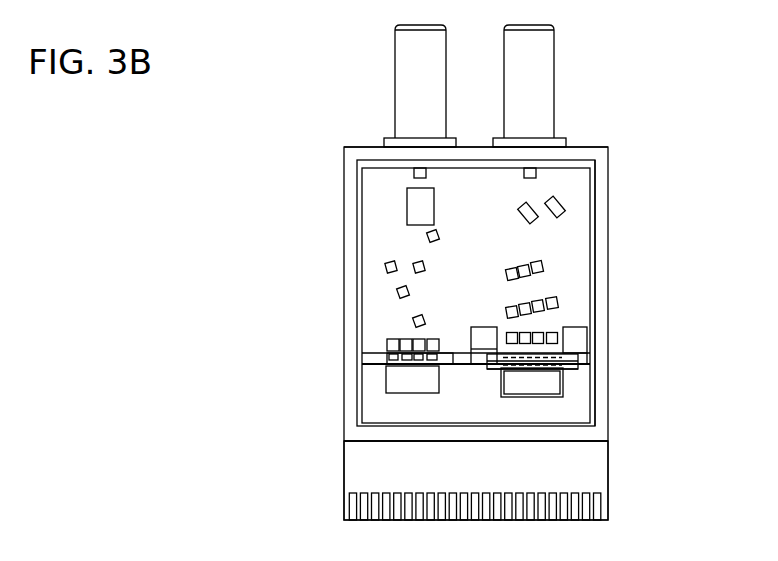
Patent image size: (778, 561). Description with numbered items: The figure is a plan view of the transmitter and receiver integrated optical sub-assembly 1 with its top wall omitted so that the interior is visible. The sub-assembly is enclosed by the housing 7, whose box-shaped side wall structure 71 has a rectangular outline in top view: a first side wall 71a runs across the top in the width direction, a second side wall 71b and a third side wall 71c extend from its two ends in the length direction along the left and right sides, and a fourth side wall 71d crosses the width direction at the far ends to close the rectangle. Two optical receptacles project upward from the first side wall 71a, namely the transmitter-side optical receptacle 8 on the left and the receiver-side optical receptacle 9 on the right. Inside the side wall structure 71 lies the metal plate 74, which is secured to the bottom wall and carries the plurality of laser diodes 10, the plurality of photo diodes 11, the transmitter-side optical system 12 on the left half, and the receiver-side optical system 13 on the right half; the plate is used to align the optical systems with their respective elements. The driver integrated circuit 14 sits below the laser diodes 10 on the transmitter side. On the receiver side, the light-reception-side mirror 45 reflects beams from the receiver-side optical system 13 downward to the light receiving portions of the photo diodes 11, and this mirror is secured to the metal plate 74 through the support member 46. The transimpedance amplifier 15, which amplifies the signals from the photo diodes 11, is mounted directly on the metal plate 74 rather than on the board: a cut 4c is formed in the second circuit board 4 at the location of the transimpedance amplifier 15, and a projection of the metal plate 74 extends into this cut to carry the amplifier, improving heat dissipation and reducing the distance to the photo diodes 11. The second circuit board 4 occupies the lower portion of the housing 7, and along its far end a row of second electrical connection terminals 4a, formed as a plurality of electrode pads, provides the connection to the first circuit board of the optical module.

The transmitter and receiver integrated optical sub-assembly 1 is at (702, 158).
The second circuit board 4 is at (592, 461).
The second electrical connection terminals 4a is at (597, 508).
The cut 4c is at (560, 382).
The housing 7 is at (648, 243).
The transmitter-side optical receptacle 8 is at (407, 54).
The receiver-side optical receptacle 9 is at (537, 51).
The laser diodes 10 is at (387, 360).
The photo diodes 11 is at (565, 355).
The transmitter-side optical system 12 is at (385, 247).
The receiver-side optical system 13 is at (563, 250).
The driver integrated circuit 14 is at (397, 379).
The transimpedance amplifier 15 is at (544, 382).
The light-reception-side mirror 45 is at (571, 364).
The support member 46 is at (578, 337).
The side wall structure 71 is at (610, 158).
The first side wall 71a is at (580, 150).
The second side wall 71b is at (357, 165).
The third side wall 71c is at (597, 290).
The fourth side wall 71d is at (362, 441).
The metal plate 74 is at (375, 295).